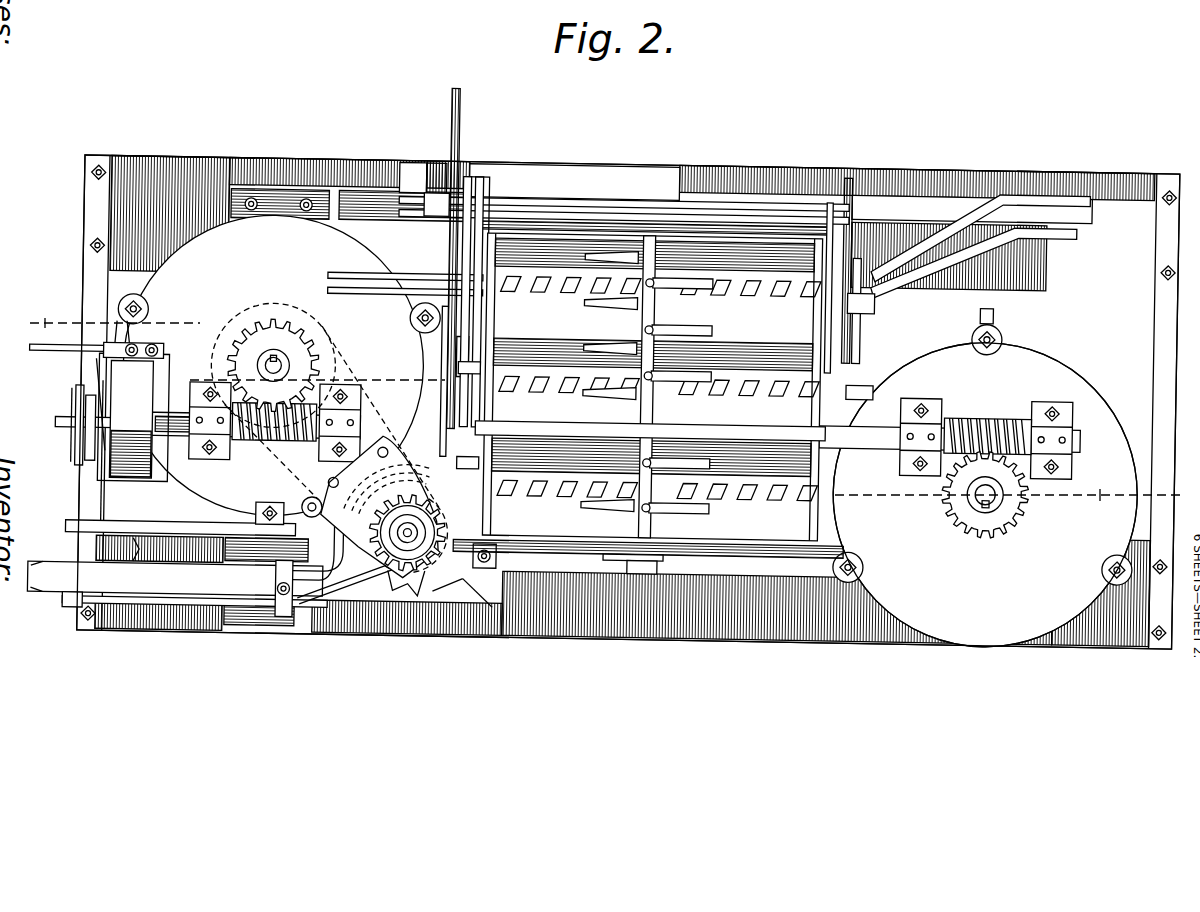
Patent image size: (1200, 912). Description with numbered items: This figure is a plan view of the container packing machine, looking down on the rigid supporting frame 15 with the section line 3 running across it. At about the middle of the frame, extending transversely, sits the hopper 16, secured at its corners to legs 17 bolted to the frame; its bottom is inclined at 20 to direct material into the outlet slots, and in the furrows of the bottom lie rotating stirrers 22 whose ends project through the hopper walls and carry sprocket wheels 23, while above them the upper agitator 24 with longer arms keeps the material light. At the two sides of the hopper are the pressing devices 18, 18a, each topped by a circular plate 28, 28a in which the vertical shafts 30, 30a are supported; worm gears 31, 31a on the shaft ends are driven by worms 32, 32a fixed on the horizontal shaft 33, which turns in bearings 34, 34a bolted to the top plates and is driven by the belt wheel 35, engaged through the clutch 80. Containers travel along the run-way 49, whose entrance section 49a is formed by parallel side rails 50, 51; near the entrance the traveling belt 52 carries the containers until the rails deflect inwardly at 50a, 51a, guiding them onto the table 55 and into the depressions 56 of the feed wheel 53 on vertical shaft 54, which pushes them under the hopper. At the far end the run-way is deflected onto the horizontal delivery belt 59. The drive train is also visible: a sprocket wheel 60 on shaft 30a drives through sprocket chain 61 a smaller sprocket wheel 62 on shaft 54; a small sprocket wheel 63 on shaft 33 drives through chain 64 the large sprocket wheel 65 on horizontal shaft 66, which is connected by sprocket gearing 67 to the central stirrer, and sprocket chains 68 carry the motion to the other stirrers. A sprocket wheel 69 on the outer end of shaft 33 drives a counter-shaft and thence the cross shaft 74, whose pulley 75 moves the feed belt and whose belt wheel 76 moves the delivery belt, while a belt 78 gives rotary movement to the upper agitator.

The section line 3— 3 is at (597, 417).
The supporting frame 15 is at (1110, 625).
The hopper 16 is at (558, 226).
The legs 17 is at (480, 170).
The pressing device 18 is at (1081, 368).
The pressing device 18a is at (203, 472).
The inclined bottom 20 is at (652, 382).
The stirrer 22 is at (735, 283).
The sprocket wheels 23 is at (877, 292).
The agitator 24 is at (645, 395).
The circular plate 28 is at (1110, 402).
The circular plate 28a is at (277, 366).
The vertical shaft 30 is at (983, 476).
The vertical shaft 30a is at (272, 355).
The worm gear 31 is at (977, 498).
The worm gear 31a is at (262, 328).
The worm 32 is at (988, 417).
The worm 32a is at (250, 445).
The horizontal shaft 33 is at (172, 418).
The bearings 34 is at (916, 423).
The bearings 34a is at (365, 393).
The belt wheel 35 is at (133, 417).
The run-way 49 is at (165, 615).
The entrance section 49a is at (927, 215).
The side rail 50 is at (179, 556).
The deflected portion 50a is at (395, 598).
The side rail 51 is at (222, 604).
The deflected portion 51a is at (448, 590).
The traveling belt 52 is at (174, 578).
The feed wheel 53 is at (455, 572).
The vertical shaft 54 is at (458, 564).
The table 55 is at (312, 503).
The depressions 56 is at (405, 583).
The delivery belt 59 is at (972, 209).
The sprocket wheel 60 is at (307, 307).
The sprocket chain 61 is at (360, 352).
The sprocket wheel 62 is at (360, 480).
The sprocket wheel 63 is at (452, 430).
The chain 64 is at (405, 291).
The sprocket wheel 65 is at (459, 97).
The horizontal shaft 66 is at (695, 192).
The sprocket gearing 67 is at (852, 170).
The sprocket chains 68 is at (472, 448).
The sprocket wheel 69 is at (82, 412).
The cross shaft 74 is at (463, 337).
The pulley 75 is at (502, 600).
The belt wheel 76 is at (365, 160).
The belt 78 is at (574, 182).
The clutch 80 is at (78, 440).